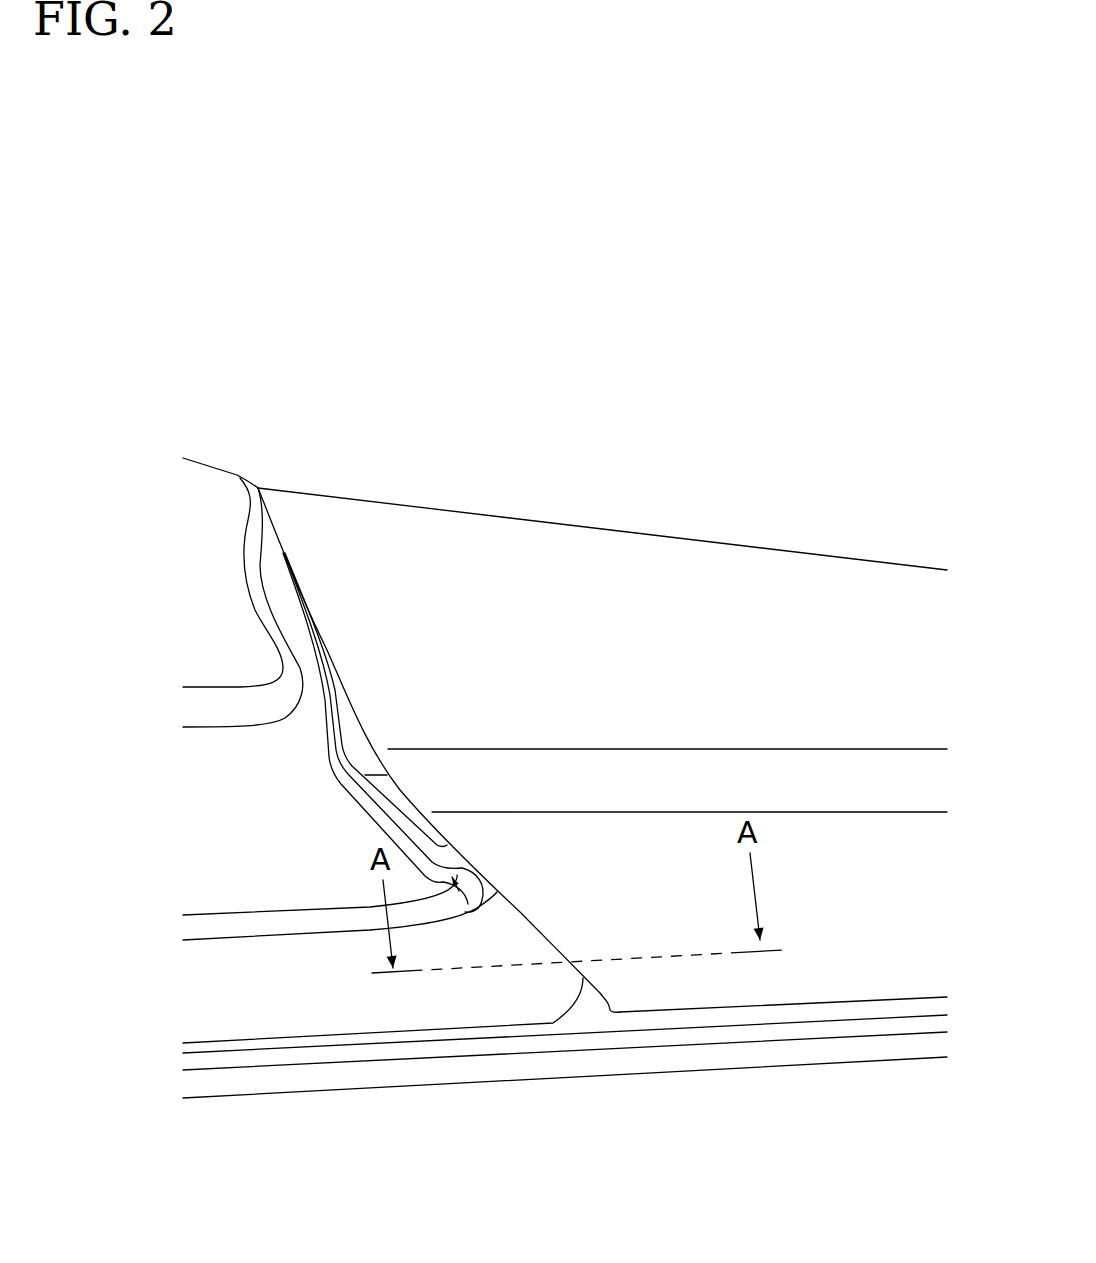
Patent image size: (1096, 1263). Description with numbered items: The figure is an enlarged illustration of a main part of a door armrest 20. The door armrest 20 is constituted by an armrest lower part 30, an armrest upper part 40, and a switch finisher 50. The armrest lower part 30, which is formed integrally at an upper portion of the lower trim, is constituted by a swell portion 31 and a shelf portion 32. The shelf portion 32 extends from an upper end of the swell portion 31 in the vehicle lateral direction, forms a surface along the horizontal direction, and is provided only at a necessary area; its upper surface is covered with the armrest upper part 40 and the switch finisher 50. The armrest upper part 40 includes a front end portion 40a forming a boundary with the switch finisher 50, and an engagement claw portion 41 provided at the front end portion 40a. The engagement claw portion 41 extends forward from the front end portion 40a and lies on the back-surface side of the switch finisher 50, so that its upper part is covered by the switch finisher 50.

The door armrest 20 is at (518, 395).
The armrest lower part 30 is at (368, 1108).
The swell portion 31 is at (537, 1062).
The shelf portion 32 is at (777, 1017).
The armrest upper part 40 is at (207, 440).
The front end portion 40a is at (277, 568).
The engagement claw portion 41 is at (497, 910).
The switch finisher 50 is at (662, 592).